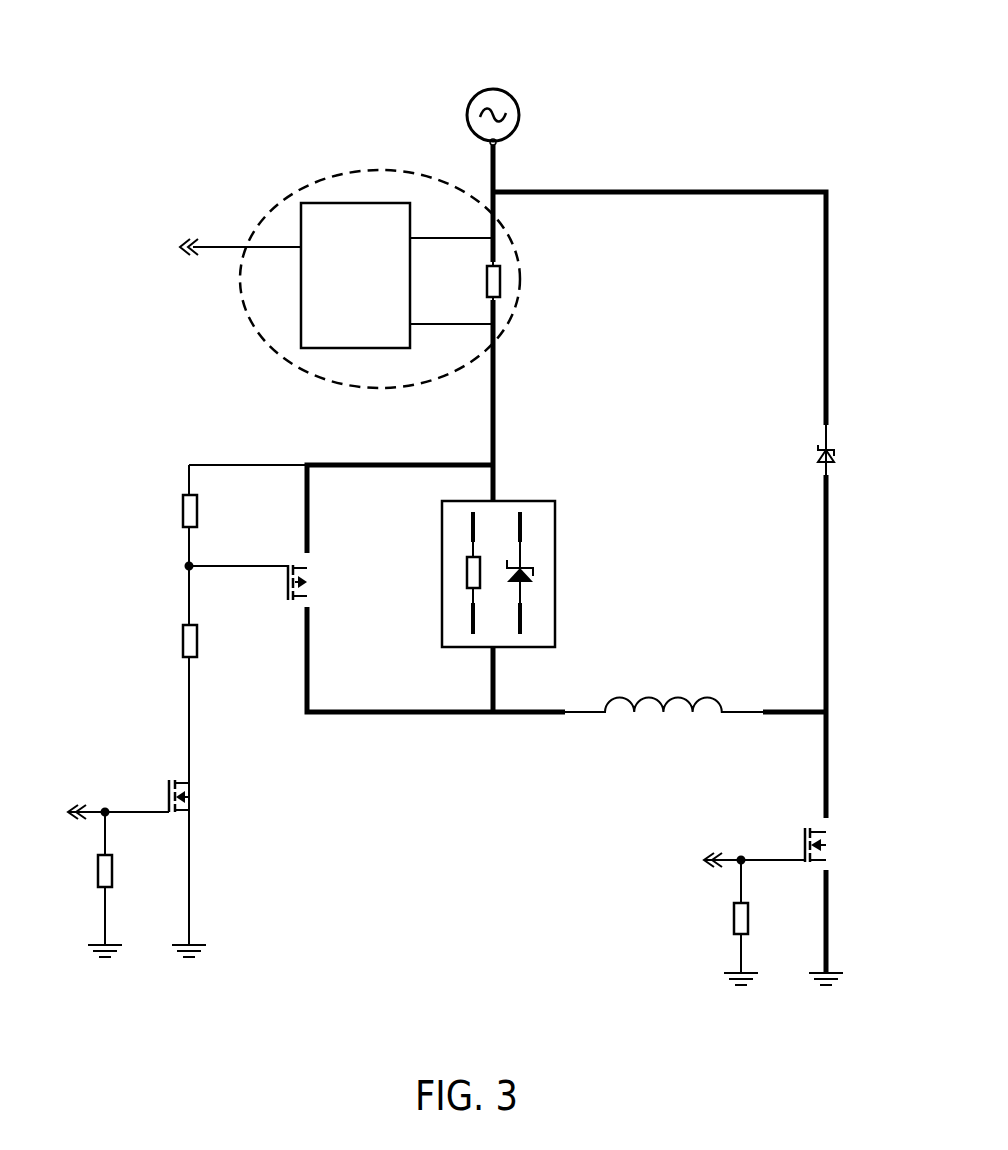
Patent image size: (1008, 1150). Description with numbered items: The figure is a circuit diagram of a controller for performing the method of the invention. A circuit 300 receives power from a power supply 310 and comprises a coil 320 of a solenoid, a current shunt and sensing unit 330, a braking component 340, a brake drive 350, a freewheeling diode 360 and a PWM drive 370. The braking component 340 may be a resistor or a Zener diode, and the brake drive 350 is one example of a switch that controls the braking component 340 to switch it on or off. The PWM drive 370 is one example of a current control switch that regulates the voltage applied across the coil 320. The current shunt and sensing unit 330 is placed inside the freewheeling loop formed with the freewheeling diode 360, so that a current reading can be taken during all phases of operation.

The circuit 300 is at (82, 62).
The power supply 310 is at (470, 102).
The coil of a solenoid 320 is at (710, 697).
The current shunt and sensing unit 330 is at (314, 180).
The braking component 340 is at (541, 501).
The brake drive 350 is at (132, 810).
The freewheeling diode 360 is at (830, 440).
The PWM drive 370 is at (762, 860).